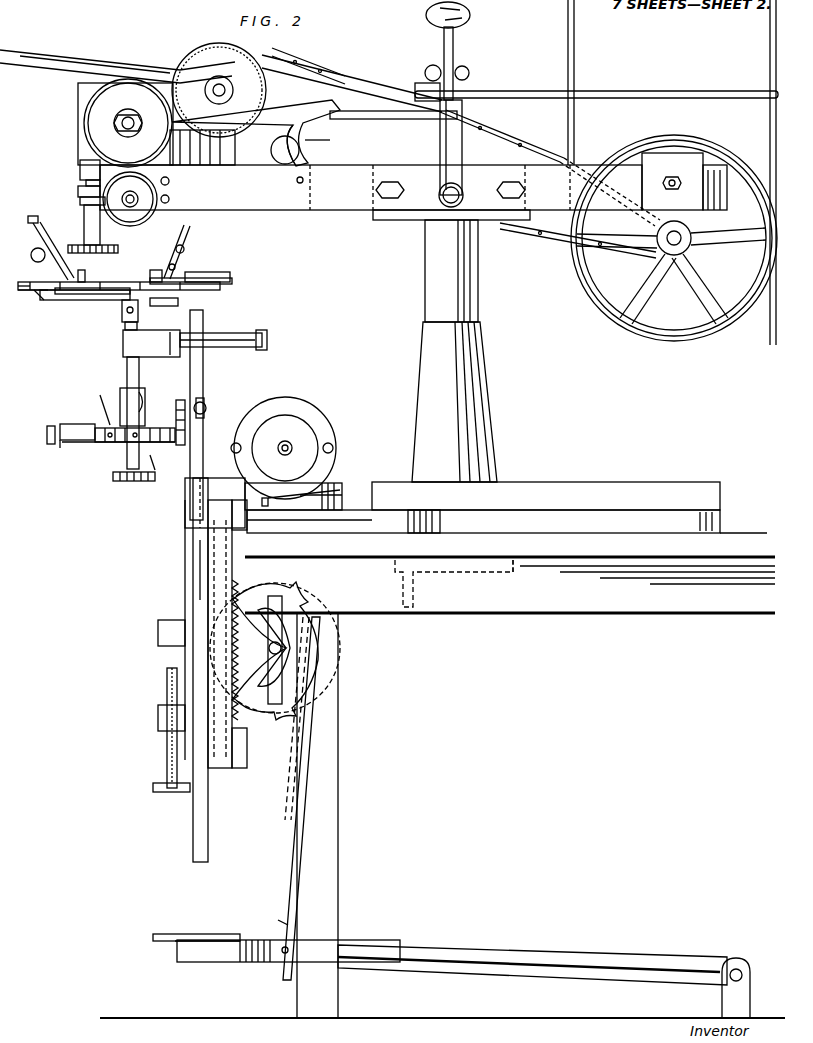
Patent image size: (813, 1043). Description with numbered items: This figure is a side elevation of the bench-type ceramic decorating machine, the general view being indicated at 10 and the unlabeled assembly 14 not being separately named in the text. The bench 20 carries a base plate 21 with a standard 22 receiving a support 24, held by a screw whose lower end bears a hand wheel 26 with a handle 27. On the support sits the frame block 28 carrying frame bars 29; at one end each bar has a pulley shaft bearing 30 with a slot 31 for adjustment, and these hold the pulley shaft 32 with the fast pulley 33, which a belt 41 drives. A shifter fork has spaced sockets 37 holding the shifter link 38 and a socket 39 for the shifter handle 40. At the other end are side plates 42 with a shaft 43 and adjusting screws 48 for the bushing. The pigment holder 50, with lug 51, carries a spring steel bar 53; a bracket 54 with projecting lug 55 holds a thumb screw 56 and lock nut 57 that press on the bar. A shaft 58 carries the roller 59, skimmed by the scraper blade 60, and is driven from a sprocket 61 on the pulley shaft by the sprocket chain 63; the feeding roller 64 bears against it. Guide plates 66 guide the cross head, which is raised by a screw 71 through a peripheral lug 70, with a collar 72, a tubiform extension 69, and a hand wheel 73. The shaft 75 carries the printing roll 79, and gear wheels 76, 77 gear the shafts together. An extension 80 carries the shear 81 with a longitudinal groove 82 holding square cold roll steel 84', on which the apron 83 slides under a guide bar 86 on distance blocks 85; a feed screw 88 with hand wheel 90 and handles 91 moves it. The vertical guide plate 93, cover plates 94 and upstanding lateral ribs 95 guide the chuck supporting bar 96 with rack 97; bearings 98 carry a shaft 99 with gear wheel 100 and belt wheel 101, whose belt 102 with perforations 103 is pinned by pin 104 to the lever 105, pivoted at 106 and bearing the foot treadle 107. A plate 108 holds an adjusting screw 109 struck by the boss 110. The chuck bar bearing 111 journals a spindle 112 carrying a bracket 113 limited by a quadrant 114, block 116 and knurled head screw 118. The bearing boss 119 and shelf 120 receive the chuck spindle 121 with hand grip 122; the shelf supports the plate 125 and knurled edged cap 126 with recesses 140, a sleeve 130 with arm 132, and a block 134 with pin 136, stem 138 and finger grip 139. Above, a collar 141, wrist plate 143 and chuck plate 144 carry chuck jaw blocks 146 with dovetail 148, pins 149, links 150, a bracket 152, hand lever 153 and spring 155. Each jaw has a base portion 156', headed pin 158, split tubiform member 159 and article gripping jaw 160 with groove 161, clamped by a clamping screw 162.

The work table 10 is at (40, 260).
The pulley shaft 14 is at (122, 123).
The bench 20 is at (442, 787).
The base plate 21 is at (660, 510).
The standard 22 is at (416, 408).
The support 24 is at (425, 297).
The hand wheel 26 is at (505, 572).
The handle 27 is at (418, 607).
The frame block 28 is at (395, 220).
The frame bar 29 is at (326, 210).
The pulley shaft bearing 30 is at (697, 165).
The slot 31 is at (690, 180).
The pulley shaft 32 is at (660, 255).
The fast pulley 33 is at (697, 330).
The spaced sockets 37 is at (520, 90).
The shifter link 38 is at (700, 92).
The socket 39 is at (415, 85).
The shifter handle 40 is at (36, 50).
The belt 41 is at (740, 310).
The side plates 42 is at (310, 155).
The shaft 43 is at (280, 160).
The adjusting screws 48 is at (292, 58).
The pigment holder 50 is at (272, 115).
The lug 51 is at (332, 140).
The spring steel bar 53 is at (392, 119).
The bracket 54 is at (440, 140).
The projecting lug 55 is at (468, 70).
The thumb screw 56 is at (470, 17).
The lock nut 57 is at (433, 65).
The shaft 58 is at (213, 88).
The roller 59 is at (210, 48).
The scraper blade 60 is at (200, 165).
The sprocket 61 is at (650, 238).
The sprocket chain 63 is at (518, 152).
The feeding roller 64 is at (96, 104).
The guide plates 66 is at (80, 170).
The tubiform extension 69 is at (78, 110).
The peripheral lug 70 is at (80, 201).
The screw 71 is at (86, 181).
The collar 72 is at (78, 190).
The hand wheel 73 is at (102, 235).
The shaft 75 is at (170, 197).
The gear wheel 76 is at (285, 58).
The gear wheel 77 is at (160, 65).
The printing roll 79 is at (130, 199).
The extension 80 is at (404, 525).
The shear 81 is at (332, 533).
The longitudinal groove 82 is at (270, 506).
The apron 83 is at (235, 485).
The square cold roll steel 84' is at (269, 526).
The distance block 85 is at (342, 497).
The guide bar 86 is at (340, 484).
The feed screw 88 is at (297, 437).
The hand wheel 90 is at (325, 422).
The handles 91 is at (334, 448).
The vertical guide plate 93 is at (218, 533).
The cover plates 94 is at (185, 588).
The upstanding lateral ribs 95 is at (208, 575).
The chuck supporting bar 96 is at (208, 848).
The rack 97 is at (238, 748).
The bearings 98 is at (262, 653).
The shaft 99 is at (290, 655).
The gear wheel 100 is at (272, 712).
The belt wheel 101 is at (260, 700).
The belt 102 is at (296, 870).
The perforations 103 is at (278, 920).
The pin 104 is at (280, 955).
The lever 105 is at (462, 947).
The pivot 106 is at (748, 960).
The foot treadle 107 is at (156, 942).
The plate 108 is at (158, 722).
The adjusting screw 109 is at (162, 795).
The boss 110 is at (158, 636).
The chuck bar bearing 111 is at (236, 347).
The spindle 112 is at (276, 340).
The bracket 113 is at (139, 368).
The quadrant 114 is at (196, 375).
The block 116 is at (180, 445).
The knurled head screw 118 is at (205, 410).
The bearing boss 119 is at (123, 345).
The shelf 120 is at (62, 446).
The chuck spindle 121 is at (125, 326).
The hand grip 122 is at (120, 483).
The plate 125 is at (152, 483).
The knurled edged cap 126 is at (100, 410).
The sleeve 130 is at (142, 398).
The arm 132 is at (120, 412).
The block 134 is at (72, 424).
The pin 136 is at (95, 445).
The stem 138 is at (58, 450).
The finger grip 139 is at (47, 436).
The recesses 140 is at (130, 440).
The collar 141 is at (138, 312).
The plate 143 is at (104, 294).
The chuck plate 144 is at (232, 284).
The chuck jaw block 146 is at (98, 270).
The dovetail 148 is at (180, 275).
The pin 149 is at (42, 300).
The links 150 is at (70, 300).
The bracket 152 is at (30, 292).
The hand lever 153 is at (20, 292).
The spring 155 is at (180, 303).
The base portion 156' is at (227, 269).
The headed pin 158 is at (168, 248).
The split tubiform member 159 is at (184, 246).
The article gripping jaw 160 is at (36, 248).
The groove 161 is at (28, 220).
The clamping screw 162 is at (180, 265).